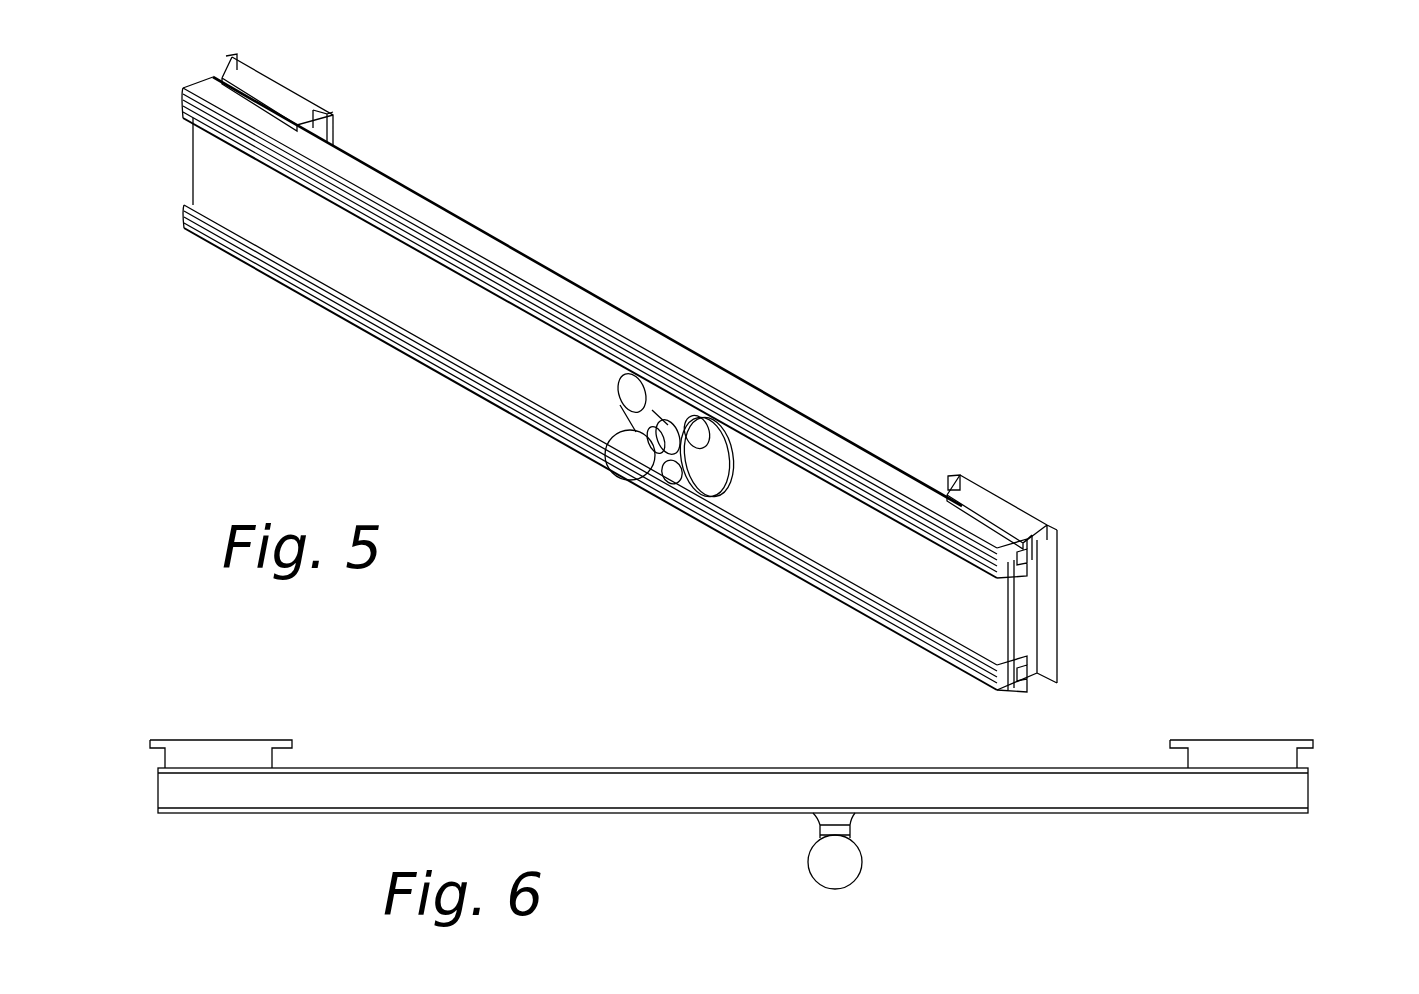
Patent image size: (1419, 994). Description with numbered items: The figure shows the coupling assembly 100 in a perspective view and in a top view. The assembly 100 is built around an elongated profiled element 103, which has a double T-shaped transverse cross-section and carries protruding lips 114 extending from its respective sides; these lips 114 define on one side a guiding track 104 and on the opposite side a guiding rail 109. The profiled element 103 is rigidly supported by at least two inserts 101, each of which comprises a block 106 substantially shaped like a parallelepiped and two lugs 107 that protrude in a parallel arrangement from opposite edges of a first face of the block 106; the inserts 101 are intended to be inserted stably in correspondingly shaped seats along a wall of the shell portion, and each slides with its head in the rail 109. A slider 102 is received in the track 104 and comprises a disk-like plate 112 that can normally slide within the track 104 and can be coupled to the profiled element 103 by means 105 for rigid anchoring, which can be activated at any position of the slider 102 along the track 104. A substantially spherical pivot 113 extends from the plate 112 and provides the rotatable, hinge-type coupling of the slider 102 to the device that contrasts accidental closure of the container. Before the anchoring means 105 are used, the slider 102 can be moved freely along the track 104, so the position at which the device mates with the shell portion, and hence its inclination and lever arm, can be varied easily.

In FIG. 5, the assembly 100 is at (655, 293).
In FIG. 6, the assembly 100 is at (474, 733).
In FIG. 5, the insert 101 is at (310, 80).
In FIG. 6, the insert 101 is at (197, 730).
In FIG. 5, the slider 102 is at (695, 482).
In FIG. 6, the slider 102 is at (870, 878).
In FIG. 5, the profiled element 103 is at (843, 428).
In FIG. 6, the profiled element 103 is at (1088, 765).
In FIG. 5, the guiding track 104 is at (843, 550).
In FIG. 5, the anchoring means 105 is at (700, 428).
In FIG. 5, the block 106 is at (265, 90).
In FIG. 6, the block 106 is at (236, 748).
In FIG. 5, the lug 107 is at (228, 62).
In FIG. 6, the lug 107 is at (150, 744).
In FIG. 5, the guiding rail 109 is at (1017, 613).
In FIG. 5, the plate 112 is at (690, 465).
In FIG. 5, the pivot 113 is at (630, 458).
In FIG. 6, the pivot 113 is at (822, 857).
In FIG. 5, the protruding lip 114 is at (772, 435).